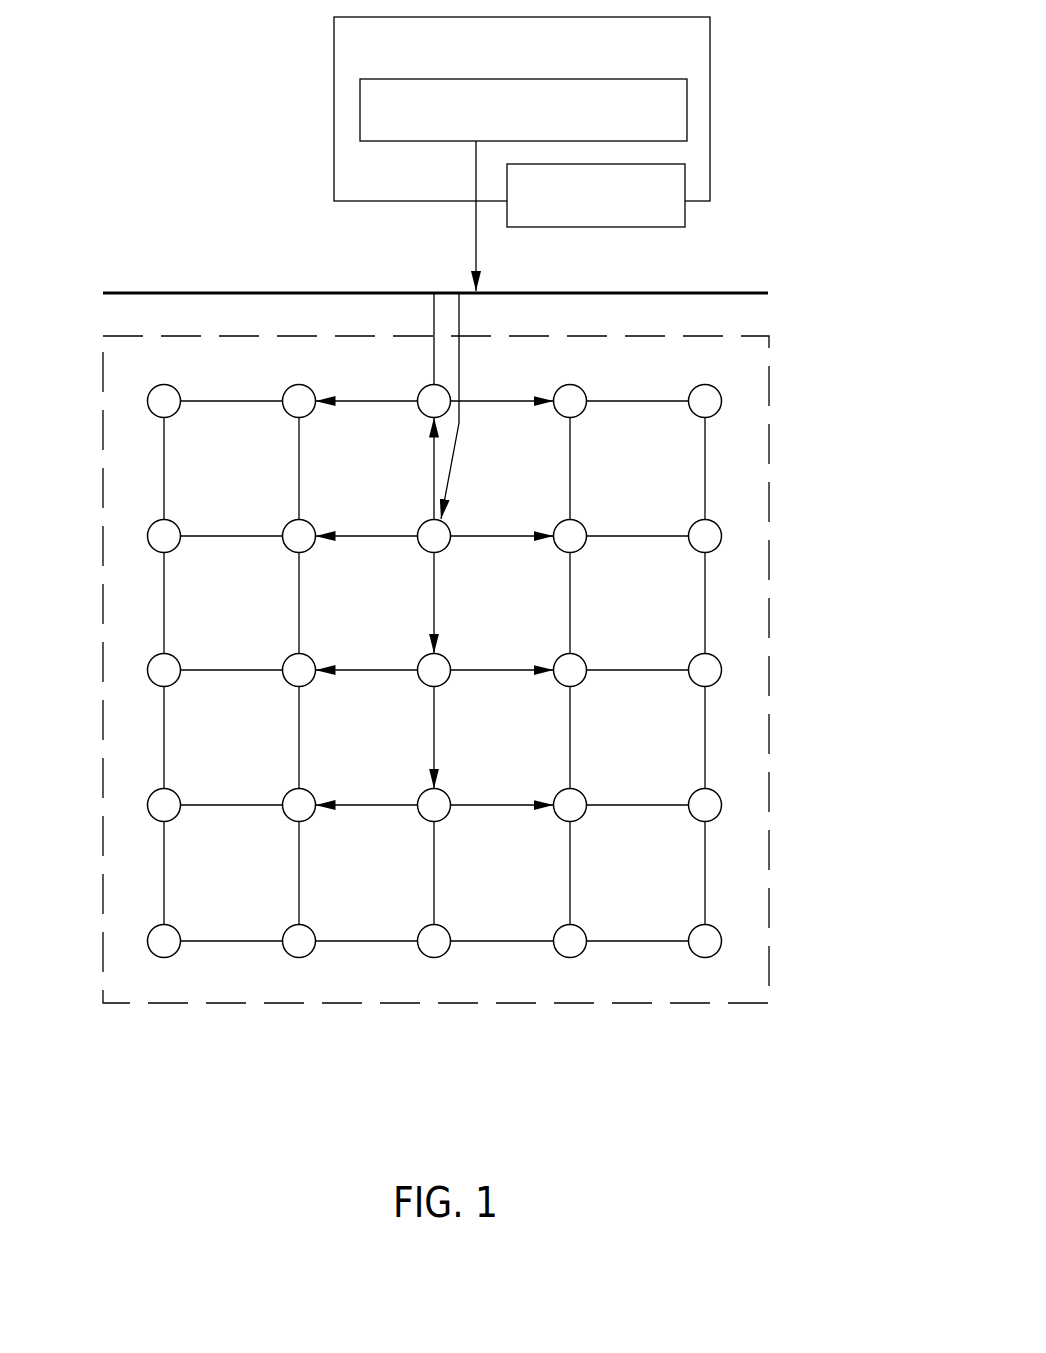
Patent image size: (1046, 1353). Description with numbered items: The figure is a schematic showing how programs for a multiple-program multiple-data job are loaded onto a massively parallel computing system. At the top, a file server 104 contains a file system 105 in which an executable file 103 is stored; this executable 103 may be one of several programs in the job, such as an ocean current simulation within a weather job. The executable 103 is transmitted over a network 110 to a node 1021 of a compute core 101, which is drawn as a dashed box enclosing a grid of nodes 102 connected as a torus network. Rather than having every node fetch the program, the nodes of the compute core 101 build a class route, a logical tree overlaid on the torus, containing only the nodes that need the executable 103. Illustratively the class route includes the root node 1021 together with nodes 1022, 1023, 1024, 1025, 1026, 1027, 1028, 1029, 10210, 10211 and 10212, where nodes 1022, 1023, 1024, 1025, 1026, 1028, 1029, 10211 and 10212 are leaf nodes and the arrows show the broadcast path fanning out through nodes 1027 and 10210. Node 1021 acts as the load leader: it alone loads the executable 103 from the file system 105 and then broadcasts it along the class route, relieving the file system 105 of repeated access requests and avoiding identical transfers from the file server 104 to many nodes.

The compute core 101 is at (769, 408).
The node 102 is at (435, 626).
The root node 1021 is at (492, 505).
The leaf node 1022 is at (419, 412).
The leaf node 1023 is at (307, 386).
The leaf node 1024 is at (578, 386).
The leaf node 1025 is at (307, 521).
The leaf node 1026 is at (578, 521).
The node 1027 is at (442, 655).
The leaf node 1028 is at (578, 655).
The leaf node 1029 is at (307, 655).
The node 10210 is at (442, 790).
The leaf node 10211 is at (307, 790).
The leaf node 10212 is at (578, 790).
The executable file 103 is at (570, 227).
The file server 104 is at (630, 59).
The file system 105 is at (630, 120).
The network 110 is at (710, 292).